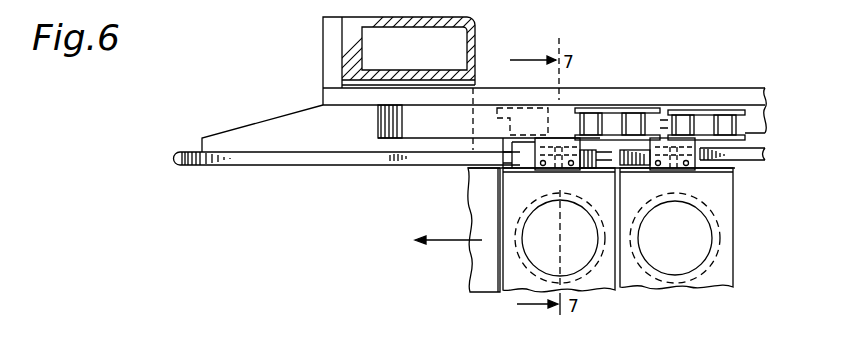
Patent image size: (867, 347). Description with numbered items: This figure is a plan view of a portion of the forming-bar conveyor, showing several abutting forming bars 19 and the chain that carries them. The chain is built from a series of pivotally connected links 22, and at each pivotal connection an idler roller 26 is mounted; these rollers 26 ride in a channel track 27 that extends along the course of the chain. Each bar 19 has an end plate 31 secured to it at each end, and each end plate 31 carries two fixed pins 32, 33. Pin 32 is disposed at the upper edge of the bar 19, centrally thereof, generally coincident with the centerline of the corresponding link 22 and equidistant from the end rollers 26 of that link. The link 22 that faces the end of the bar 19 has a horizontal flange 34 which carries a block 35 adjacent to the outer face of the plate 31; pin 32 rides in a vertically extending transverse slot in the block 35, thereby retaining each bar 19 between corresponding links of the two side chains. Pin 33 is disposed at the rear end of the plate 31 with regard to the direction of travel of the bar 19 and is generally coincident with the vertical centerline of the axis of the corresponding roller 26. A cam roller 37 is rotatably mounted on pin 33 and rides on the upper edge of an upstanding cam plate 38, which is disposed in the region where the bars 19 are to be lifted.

The forming bar 19 is at (520, 280).
The link 22 is at (598, 110).
The idler roller 26 is at (683, 117).
The channel track 27 is at (760, 122).
The end plate 31 is at (518, 173).
The pin 32 is at (558, 176).
The pin 33 is at (567, 115).
The horizontal flange 34 is at (570, 170).
The block 35 is at (520, 157).
The cam roller 37 is at (610, 175).
The cam plate 38 is at (310, 165).